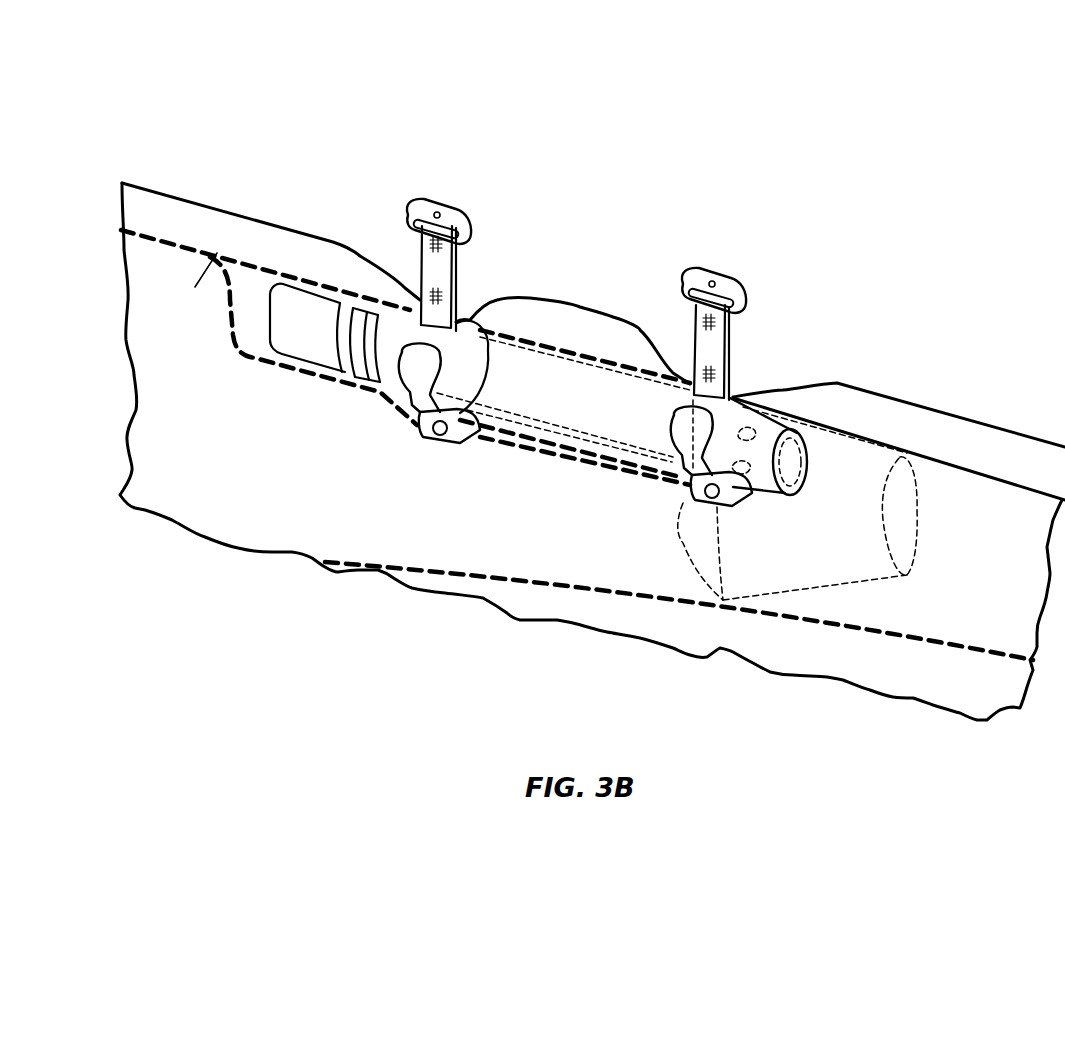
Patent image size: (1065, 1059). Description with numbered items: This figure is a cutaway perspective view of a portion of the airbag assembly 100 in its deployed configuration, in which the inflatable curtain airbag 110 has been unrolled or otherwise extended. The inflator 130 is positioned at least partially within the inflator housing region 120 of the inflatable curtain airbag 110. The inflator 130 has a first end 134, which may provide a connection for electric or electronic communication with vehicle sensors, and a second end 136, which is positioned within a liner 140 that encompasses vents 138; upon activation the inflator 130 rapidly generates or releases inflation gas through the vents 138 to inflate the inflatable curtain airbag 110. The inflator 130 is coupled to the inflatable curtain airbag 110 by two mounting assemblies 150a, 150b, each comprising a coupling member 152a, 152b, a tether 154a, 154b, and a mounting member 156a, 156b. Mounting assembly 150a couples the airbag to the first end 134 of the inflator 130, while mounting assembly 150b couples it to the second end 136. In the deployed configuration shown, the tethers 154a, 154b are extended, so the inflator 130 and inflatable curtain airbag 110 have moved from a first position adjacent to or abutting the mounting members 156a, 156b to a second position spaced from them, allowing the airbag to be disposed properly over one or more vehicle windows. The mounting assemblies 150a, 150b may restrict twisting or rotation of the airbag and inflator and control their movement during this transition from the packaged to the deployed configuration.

The airbag assembly 100 is at (653, 77).
The inflatable curtain airbag 110 is at (228, 232).
The inflator housing region 120 is at (607, 380).
The inflator 130 is at (517, 367).
The first end 134 is at (393, 303).
The second end 136 is at (773, 420).
The vents 138 is at (744, 478).
The liner 140 is at (873, 470).
The mounting assembly 150a is at (460, 283).
The mounting assembly 150b is at (735, 354).
The coupling member 152a is at (433, 347).
The coupling member 152b is at (707, 415).
The tether 154a is at (433, 277).
The tether 154b is at (713, 363).
The mounting member 156a is at (425, 213).
The mounting member 156b is at (719, 258).